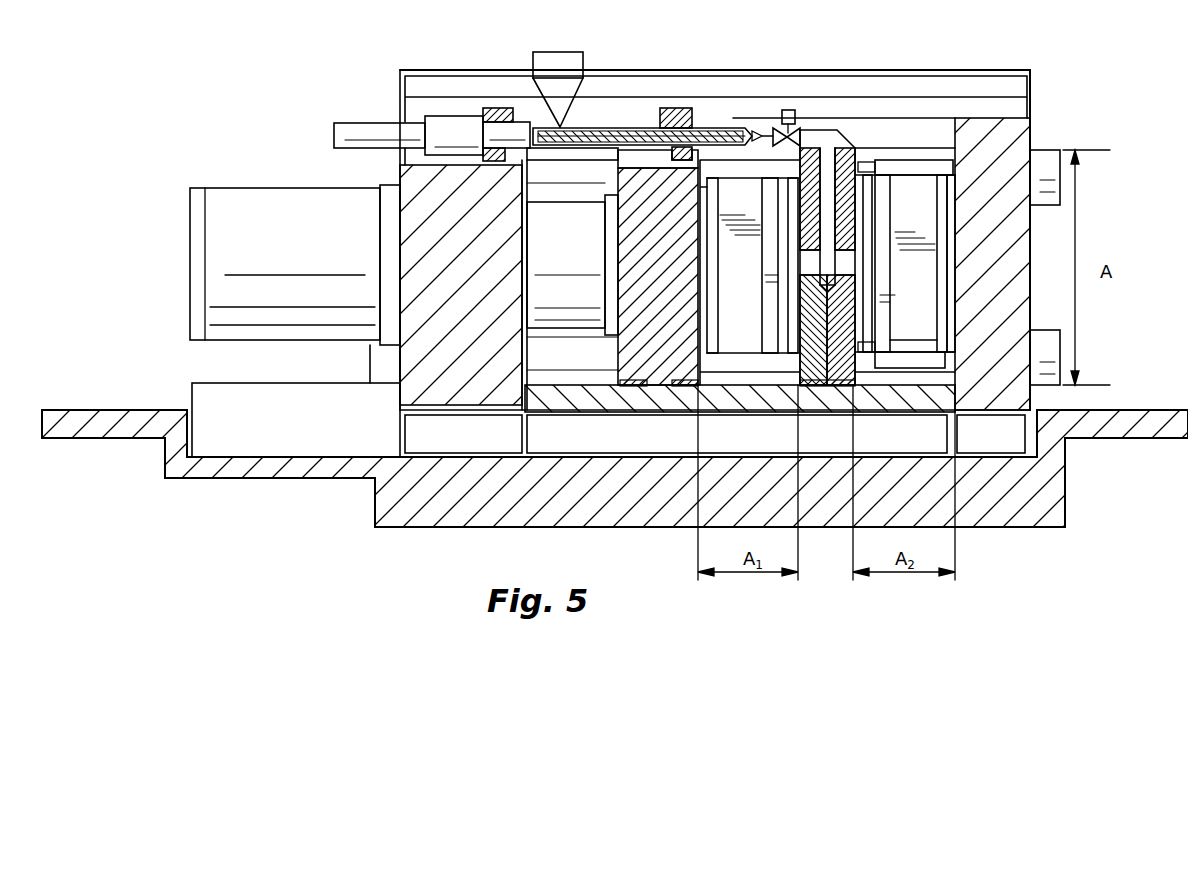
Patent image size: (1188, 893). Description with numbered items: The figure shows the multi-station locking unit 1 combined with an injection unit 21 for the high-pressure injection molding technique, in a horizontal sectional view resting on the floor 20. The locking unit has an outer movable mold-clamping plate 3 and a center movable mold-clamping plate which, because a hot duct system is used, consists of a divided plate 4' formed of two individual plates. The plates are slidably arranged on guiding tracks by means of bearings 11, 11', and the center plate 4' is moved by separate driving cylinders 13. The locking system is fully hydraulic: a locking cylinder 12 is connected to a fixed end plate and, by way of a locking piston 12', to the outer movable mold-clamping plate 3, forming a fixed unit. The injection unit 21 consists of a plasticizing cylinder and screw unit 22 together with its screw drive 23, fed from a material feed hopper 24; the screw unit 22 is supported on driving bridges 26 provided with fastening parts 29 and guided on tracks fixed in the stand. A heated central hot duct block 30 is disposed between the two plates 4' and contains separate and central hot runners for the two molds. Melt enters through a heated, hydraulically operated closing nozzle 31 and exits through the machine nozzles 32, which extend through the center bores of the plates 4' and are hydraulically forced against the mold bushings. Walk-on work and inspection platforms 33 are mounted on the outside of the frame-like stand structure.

The multi-station locking unit 1 is at (1055, 95).
The movable mold-clamping plate 3 is at (652, 372).
The divided center mold-clamping plate 4' is at (859, 330).
The bearing 11 is at (813, 413).
The guide rail 11' is at (659, 413).
The locking cylinder 12 is at (295, 304).
The locking piston 12' is at (572, 259).
The driving cylinder 13 is at (900, 162).
The floor 20 is at (148, 410).
The injection unit 21 is at (522, 128).
The screw unit 22 is at (735, 130).
The screw drive 23 is at (380, 130).
The material feed hopper 24 is at (560, 62).
The driving bridge 26 is at (493, 108).
The fastening part 29 is at (475, 150).
The heated central hot duct block 30 is at (822, 135).
The closing nozzle 31 is at (790, 110).
The machine nozzle 32 is at (845, 262).
The work and inspection platform 33 is at (983, 74).